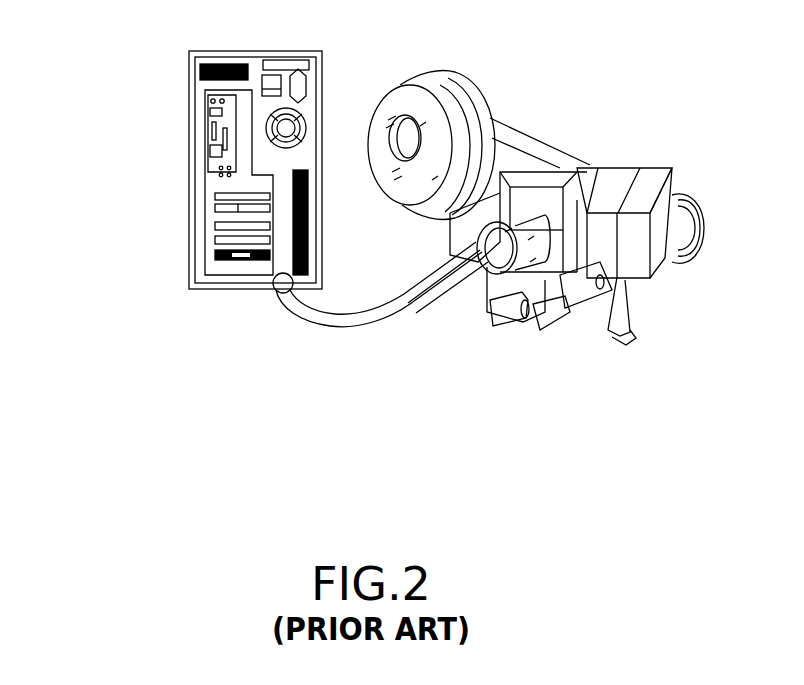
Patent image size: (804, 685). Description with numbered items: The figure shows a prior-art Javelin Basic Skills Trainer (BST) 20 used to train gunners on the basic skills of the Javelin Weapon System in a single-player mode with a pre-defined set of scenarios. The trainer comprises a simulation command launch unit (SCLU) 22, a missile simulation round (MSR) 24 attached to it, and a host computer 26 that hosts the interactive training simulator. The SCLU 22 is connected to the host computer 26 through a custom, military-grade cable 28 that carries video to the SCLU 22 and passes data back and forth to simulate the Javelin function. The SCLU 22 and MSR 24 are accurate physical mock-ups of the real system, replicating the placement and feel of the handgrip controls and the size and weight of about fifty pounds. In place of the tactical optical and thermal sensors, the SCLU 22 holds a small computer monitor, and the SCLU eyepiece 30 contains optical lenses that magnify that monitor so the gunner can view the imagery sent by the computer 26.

The Javelin Basic Skills Trainer (BST) 20 is at (60, 102).
The simulation command launch unit (SCLU) 22 is at (612, 140).
The missile simulation round (MSR) 24 is at (470, 78).
The host computer 26 is at (322, 80).
The cable 28 is at (322, 312).
The SCLU eyepiece 30 is at (507, 253).